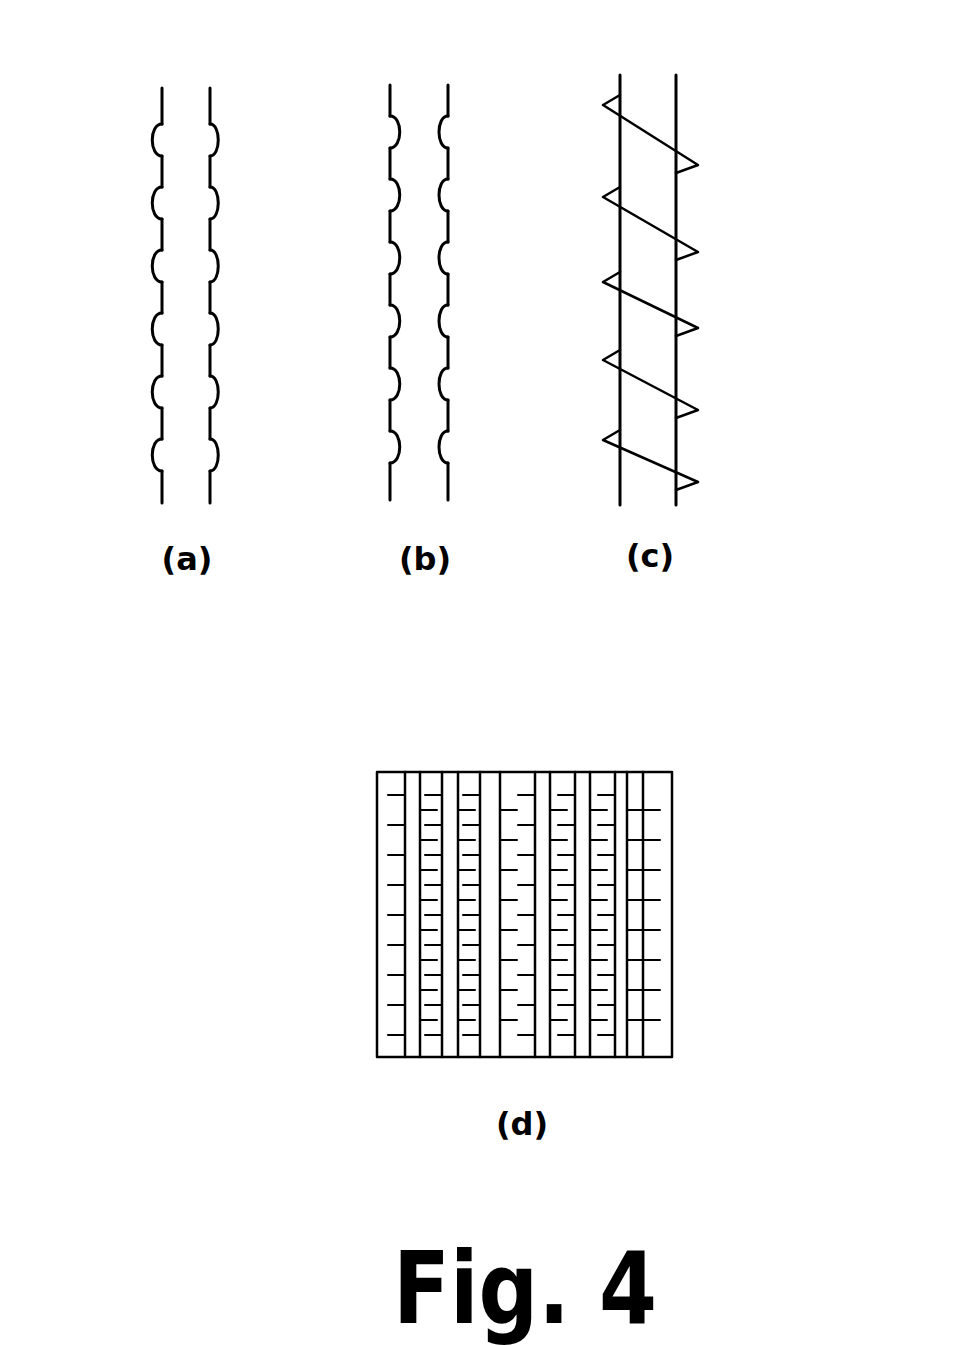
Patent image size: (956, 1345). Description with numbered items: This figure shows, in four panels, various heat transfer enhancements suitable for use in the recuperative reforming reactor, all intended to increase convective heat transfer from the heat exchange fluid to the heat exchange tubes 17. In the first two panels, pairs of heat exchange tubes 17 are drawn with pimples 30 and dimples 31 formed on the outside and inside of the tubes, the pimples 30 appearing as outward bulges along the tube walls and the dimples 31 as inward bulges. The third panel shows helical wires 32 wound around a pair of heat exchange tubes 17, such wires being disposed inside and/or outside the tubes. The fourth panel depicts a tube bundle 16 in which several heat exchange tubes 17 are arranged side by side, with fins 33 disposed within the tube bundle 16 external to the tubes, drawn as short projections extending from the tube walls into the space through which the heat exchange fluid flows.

The tube bundle 16 is at (378, 855).
The heat exchange tubes 17 is at (163, 173).
The pimples 30 is at (216, 135).
The dimples 31 is at (447, 128).
The helical wires 32 is at (688, 243).
The fins 33 is at (645, 895).